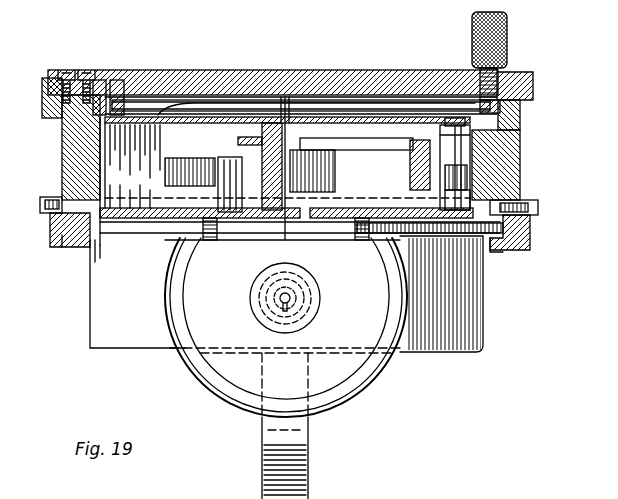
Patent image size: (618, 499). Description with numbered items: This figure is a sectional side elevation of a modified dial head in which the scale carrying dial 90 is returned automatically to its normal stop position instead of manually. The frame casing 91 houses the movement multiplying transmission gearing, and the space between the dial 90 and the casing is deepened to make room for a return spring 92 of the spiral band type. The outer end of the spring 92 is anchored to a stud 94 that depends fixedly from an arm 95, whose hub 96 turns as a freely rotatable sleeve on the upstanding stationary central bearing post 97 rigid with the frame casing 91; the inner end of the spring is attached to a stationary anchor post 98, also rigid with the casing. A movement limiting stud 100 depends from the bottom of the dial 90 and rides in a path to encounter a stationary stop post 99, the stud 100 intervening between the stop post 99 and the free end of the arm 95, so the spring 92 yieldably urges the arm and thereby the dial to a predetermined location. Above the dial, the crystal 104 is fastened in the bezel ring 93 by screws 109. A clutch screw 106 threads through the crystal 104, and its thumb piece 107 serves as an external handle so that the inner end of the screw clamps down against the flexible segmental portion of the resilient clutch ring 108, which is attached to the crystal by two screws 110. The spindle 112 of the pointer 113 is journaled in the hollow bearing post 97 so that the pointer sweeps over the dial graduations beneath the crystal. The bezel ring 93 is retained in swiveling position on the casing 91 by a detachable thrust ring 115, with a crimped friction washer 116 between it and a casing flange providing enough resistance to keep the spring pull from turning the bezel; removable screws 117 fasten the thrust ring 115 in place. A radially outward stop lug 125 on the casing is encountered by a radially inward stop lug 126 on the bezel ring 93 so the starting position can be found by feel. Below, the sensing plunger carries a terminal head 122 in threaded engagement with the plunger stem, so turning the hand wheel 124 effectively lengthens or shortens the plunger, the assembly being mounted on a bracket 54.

The bracket 54 is at (308, 440).
The dial 90 is at (410, 118).
The frame casing 91 is at (137, 294).
The return spring 92 is at (180, 160).
The bezel ring 93 is at (75, 157).
The stud 94 is at (407, 153).
The arm 95 is at (330, 142).
The hub 96 is at (257, 168).
The central bearing post 97 is at (277, 220).
The anchor post 98 is at (230, 158).
The stop post 99 is at (470, 170).
The movement limiting stud 100 is at (520, 139).
The crystal 104 is at (162, 80).
The clutch screw 106 is at (500, 84).
The thumb piece 107 is at (478, 32).
The clutch ring 108 is at (122, 95).
The screws 109 is at (66, 70).
The screws 110 is at (88, 70).
The spindle 112 is at (285, 100).
The pointer 113 is at (182, 106).
The thrust ring 115 is at (523, 248).
The friction washer 116 is at (500, 252).
The screws 117 is at (538, 210).
The terminal head 122 is at (318, 297).
The hand wheel 124 is at (369, 377).
The stop lug 125 is at (490, 200).
The stop lug 126 is at (480, 190).